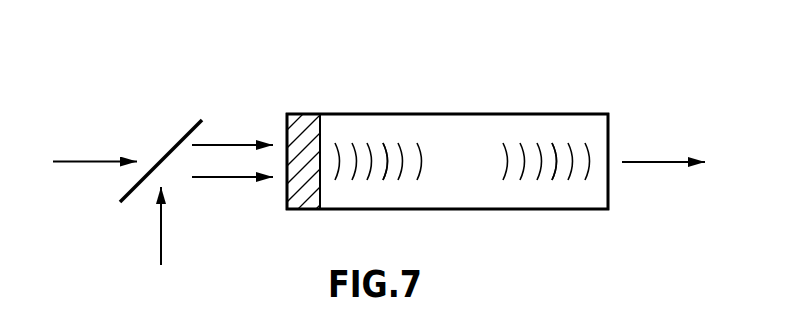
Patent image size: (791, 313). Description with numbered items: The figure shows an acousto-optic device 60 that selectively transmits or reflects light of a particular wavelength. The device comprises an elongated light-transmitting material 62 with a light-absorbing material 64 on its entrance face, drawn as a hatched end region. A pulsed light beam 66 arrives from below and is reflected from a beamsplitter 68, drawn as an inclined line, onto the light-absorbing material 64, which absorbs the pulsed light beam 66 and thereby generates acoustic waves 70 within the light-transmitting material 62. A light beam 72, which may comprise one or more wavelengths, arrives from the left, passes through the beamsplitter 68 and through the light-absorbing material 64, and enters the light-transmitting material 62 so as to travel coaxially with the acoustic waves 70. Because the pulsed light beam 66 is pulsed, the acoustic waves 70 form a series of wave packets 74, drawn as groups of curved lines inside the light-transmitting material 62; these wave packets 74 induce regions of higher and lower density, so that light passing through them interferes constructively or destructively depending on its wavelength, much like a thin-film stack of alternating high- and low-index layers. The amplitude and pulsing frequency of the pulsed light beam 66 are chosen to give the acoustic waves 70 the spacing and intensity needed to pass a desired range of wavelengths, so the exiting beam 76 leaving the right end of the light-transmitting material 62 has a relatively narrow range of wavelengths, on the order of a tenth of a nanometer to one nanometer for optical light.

The acousto-optic device 60 is at (542, 85).
The light-transmitting material 62 is at (465, 113).
The light-absorbing material 64 is at (312, 113).
The pulsed light beam 66 is at (160, 233).
The beamsplitter 68 is at (168, 150).
The acoustic waves 70 is at (395, 147).
The light beam 72 is at (90, 160).
The wave packets 74 is at (375, 185).
The exiting beam 76 is at (658, 161).